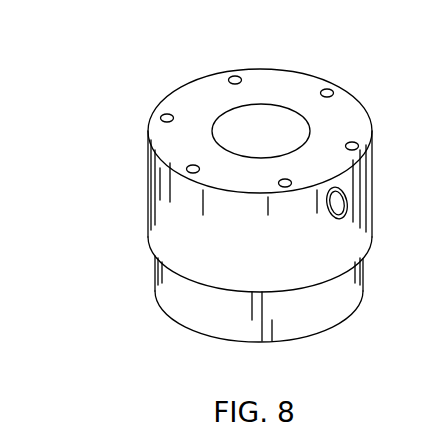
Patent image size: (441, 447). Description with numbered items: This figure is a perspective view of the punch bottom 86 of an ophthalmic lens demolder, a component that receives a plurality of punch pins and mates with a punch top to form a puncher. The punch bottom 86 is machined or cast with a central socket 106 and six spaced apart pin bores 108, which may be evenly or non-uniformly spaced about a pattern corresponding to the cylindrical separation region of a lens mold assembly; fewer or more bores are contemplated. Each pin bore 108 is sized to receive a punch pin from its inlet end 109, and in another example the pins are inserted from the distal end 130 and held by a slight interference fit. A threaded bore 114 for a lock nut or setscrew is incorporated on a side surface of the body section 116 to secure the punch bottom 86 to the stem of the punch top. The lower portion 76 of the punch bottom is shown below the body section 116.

The punch bottom 86 is at (132, 132).
The inlet end 109 is at (353, 105).
The body section 116 is at (147, 210).
The lower body portion 76 is at (155, 275).
The distal end 130 is at (327, 328).
The socket 106 is at (275, 112).
The pin bores 108 is at (235, 75).
The threaded bore 114 is at (346, 199).